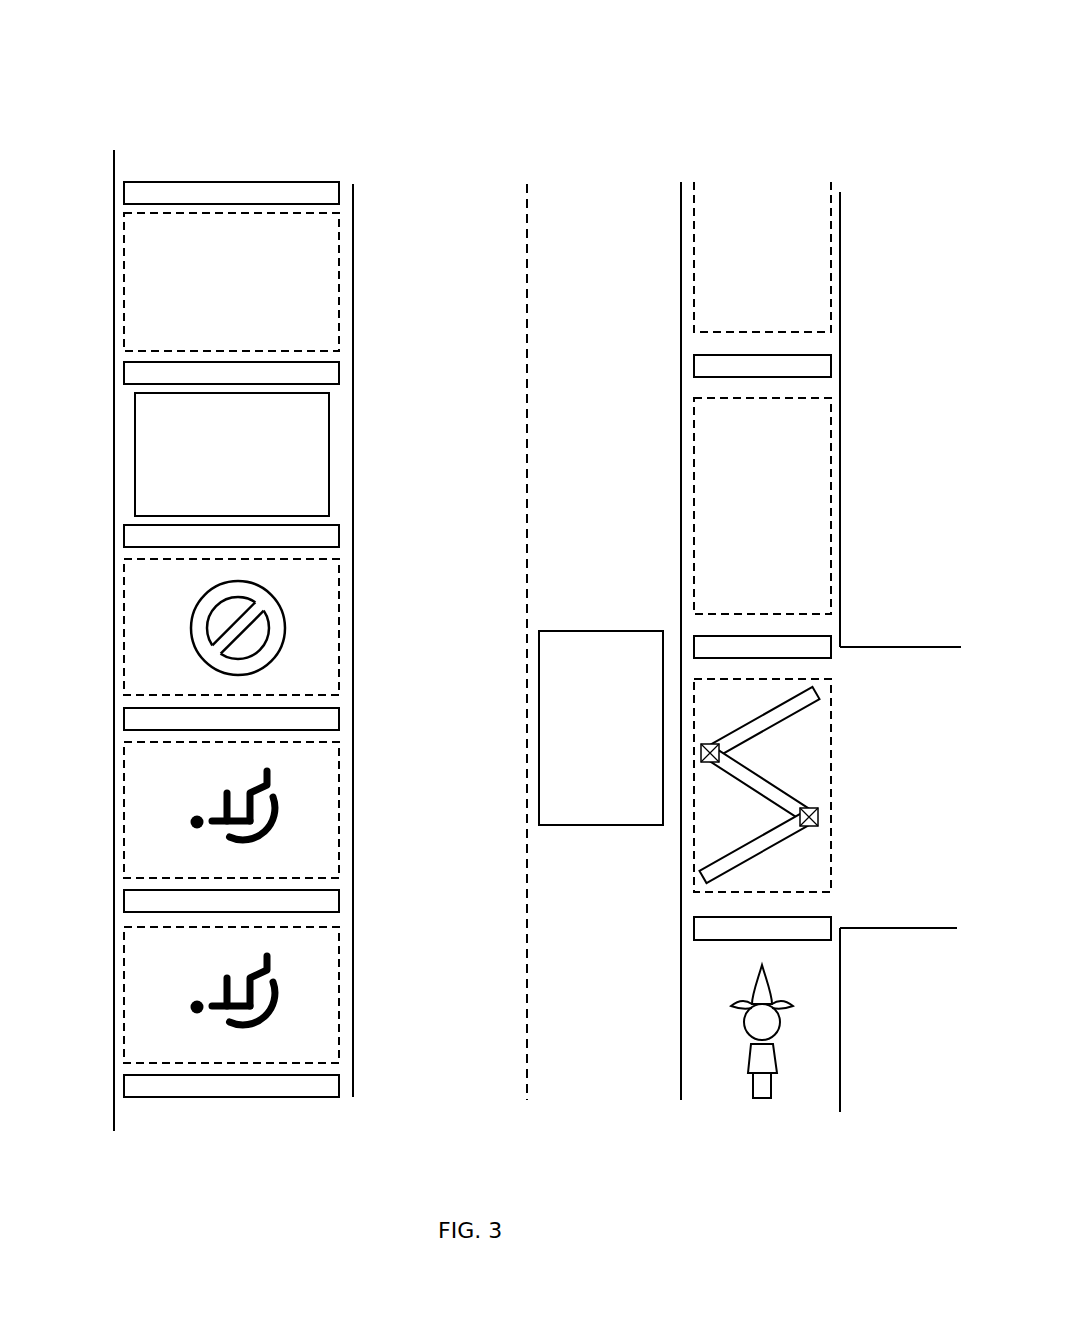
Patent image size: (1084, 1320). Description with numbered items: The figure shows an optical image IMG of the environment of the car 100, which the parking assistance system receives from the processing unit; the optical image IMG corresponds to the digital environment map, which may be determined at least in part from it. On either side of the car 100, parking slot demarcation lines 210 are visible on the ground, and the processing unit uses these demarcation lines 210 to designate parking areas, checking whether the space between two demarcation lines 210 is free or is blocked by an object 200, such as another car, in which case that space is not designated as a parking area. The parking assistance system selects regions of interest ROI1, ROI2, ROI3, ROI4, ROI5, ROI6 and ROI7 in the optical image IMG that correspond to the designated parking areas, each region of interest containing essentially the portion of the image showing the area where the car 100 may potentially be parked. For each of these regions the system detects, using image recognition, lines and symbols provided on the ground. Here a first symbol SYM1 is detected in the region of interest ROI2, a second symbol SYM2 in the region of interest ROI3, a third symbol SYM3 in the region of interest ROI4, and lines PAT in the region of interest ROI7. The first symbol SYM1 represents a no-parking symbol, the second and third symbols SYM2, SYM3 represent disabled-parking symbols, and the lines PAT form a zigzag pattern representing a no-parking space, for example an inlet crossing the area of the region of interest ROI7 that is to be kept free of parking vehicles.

The optical image IMG is at (374, 76).
The parking slot demarcation lines 210 is at (124, 192).
The object 200 is at (135, 445).
The car 100 is at (618, 631).
The region of interest ROI1 is at (124, 265).
The region of interest ROI2 is at (124, 632).
The region of interest ROI3 is at (124, 803).
The region of interest ROI4 is at (124, 972).
The region of interest ROI5 is at (832, 229).
The region of interest ROI6 is at (832, 520).
The region of interest ROI7 is at (832, 762).
The first symbol SYM1 is at (312, 621).
The second symbol SYM2 is at (315, 815).
The third symbol SYM3 is at (313, 1009).
The lines PAT is at (790, 845).